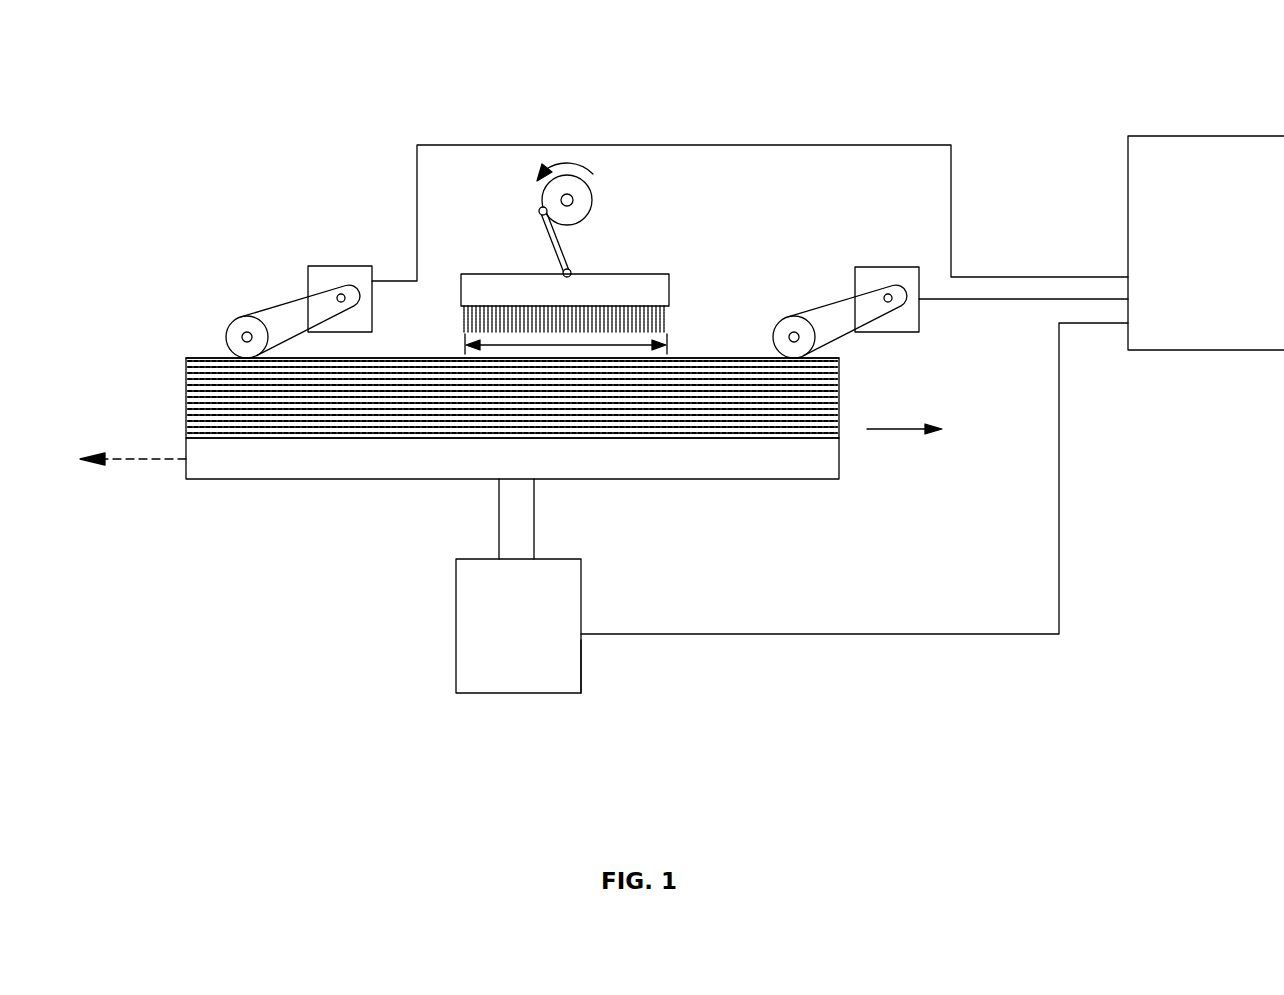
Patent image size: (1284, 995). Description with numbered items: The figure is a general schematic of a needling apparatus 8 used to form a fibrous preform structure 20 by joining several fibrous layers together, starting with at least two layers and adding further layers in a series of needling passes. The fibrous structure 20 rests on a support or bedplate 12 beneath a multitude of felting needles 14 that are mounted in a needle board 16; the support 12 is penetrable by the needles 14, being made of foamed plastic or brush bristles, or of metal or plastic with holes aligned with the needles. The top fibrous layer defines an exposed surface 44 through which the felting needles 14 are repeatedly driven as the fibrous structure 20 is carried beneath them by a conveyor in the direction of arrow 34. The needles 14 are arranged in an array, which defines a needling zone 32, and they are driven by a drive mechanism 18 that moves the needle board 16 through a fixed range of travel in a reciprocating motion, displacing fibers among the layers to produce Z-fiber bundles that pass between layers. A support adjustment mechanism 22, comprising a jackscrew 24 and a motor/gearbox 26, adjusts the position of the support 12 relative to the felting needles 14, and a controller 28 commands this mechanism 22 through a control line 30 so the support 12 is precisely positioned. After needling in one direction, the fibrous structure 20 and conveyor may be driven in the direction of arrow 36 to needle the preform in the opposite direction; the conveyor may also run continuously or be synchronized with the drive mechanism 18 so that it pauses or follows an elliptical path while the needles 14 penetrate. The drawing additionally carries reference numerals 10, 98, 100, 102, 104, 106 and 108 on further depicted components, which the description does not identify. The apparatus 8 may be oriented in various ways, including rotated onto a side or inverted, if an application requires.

The needling apparatus 8 is at (543, 101).
The polishing pad assembly 10 is at (441, 415).
The support or bedplate 12 is at (262, 480).
The felting needles 14 is at (608, 267).
The needle board 16 is at (480, 274).
The drive mechanism 18 is at (592, 198).
The fibrous preform structure 20 is at (187, 405).
The support adjustment mechanism 22 is at (453, 603).
The jackscrew 24 is at (538, 502).
The motor/gearbox 26 is at (577, 660).
The controller 28 is at (1220, 135).
The control line 30 is at (1060, 545).
The needling zone 32 is at (647, 330).
The arrow 34 is at (885, 428).
The arrow 36 is at (143, 461).
The exposed surface 44 is at (202, 360).
The first roller actuator 98 is at (332, 268).
The first roller arm 100 is at (293, 308).
The second roller actuator 102 is at (875, 268).
The second roller arm 104 is at (840, 310).
The control line 106 is at (722, 145).
The control line 108 is at (1005, 303).